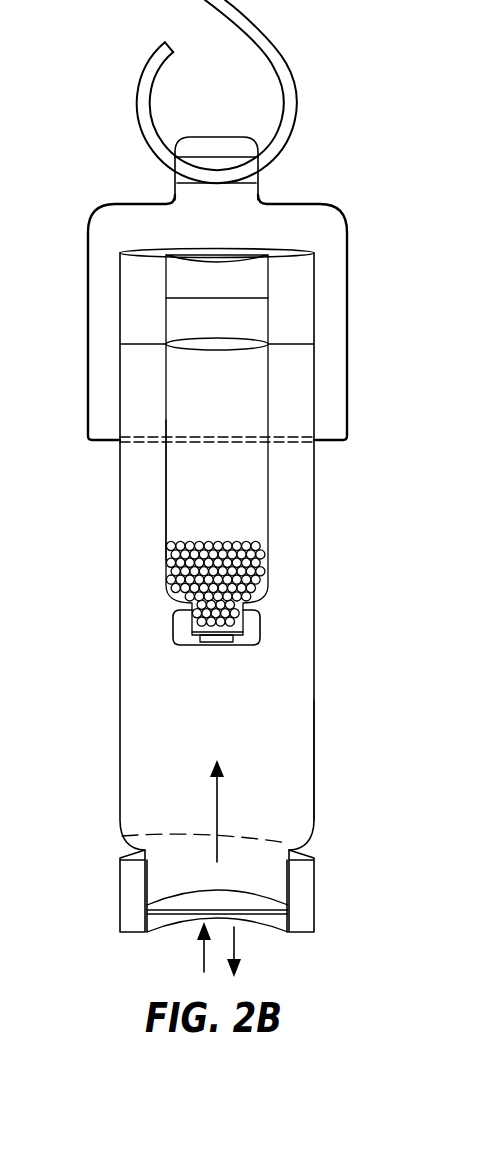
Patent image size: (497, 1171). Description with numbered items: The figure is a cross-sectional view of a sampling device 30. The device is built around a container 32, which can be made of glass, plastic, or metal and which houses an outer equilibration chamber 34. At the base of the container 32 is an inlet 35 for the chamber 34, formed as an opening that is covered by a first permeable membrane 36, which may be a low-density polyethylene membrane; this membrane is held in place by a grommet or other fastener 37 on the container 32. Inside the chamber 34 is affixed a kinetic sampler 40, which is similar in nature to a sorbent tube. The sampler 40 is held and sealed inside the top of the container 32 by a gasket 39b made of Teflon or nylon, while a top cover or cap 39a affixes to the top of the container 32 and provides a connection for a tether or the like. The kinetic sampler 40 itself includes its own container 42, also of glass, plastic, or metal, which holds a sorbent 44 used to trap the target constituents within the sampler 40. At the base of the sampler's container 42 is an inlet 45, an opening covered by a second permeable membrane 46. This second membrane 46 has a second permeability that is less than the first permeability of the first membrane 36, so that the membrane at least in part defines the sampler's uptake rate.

The sampling device 30 is at (337, 134).
The container 32 is at (317, 695).
The outer equilibration chamber 34 is at (312, 738).
The inlet 35 is at (167, 858).
The first permeable membrane 36 is at (253, 917).
The fastener 37 is at (315, 874).
The cap 39a is at (86, 262).
The gasket 39b is at (125, 303).
The kinetic sampler 40 is at (273, 495).
The container 42 is at (168, 494).
The sorbent 44 is at (168, 557).
The inlet 45 is at (190, 632).
The second permeable membrane 46 is at (238, 642).